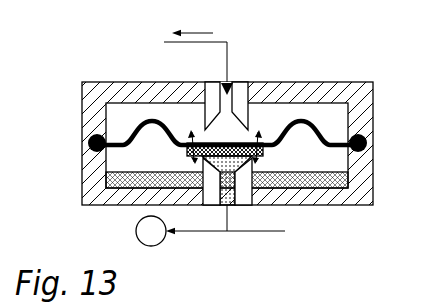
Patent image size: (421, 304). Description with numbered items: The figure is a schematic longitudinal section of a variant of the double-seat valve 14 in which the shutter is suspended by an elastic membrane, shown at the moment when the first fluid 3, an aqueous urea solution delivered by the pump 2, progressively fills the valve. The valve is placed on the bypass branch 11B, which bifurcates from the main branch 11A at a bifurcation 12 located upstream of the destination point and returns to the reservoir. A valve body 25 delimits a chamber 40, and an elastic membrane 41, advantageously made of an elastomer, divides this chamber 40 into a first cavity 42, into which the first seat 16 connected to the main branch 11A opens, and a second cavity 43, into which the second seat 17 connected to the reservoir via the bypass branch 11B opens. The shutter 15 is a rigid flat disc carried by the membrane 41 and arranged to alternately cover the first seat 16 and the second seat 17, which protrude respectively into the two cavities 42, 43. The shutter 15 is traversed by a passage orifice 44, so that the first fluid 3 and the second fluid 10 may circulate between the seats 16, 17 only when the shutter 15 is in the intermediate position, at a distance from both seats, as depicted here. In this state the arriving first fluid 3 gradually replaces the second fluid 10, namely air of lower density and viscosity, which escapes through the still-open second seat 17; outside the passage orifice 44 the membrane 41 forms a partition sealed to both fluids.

The double-seat valve 14 is at (85, 69).
The second fluid 10 is at (106, 108).
The valve body 25 is at (90, 143).
The second cavity 43 is at (154, 124).
The first cavity 42 is at (148, 166).
The first fluid 3 is at (107, 176).
The pump 2 is at (137, 224).
The passage orifice 44 is at (193, 130).
The bypass branch 11B is at (227, 41).
The main branch 11A is at (286, 232).
The elastic membrane 41 is at (307, 130).
The second seat 17 is at (258, 115).
The shutter 15 is at (231, 108).
The first seat 16 is at (268, 164).
The chamber 40 is at (344, 161).
The bifurcation 12 is at (230, 226).